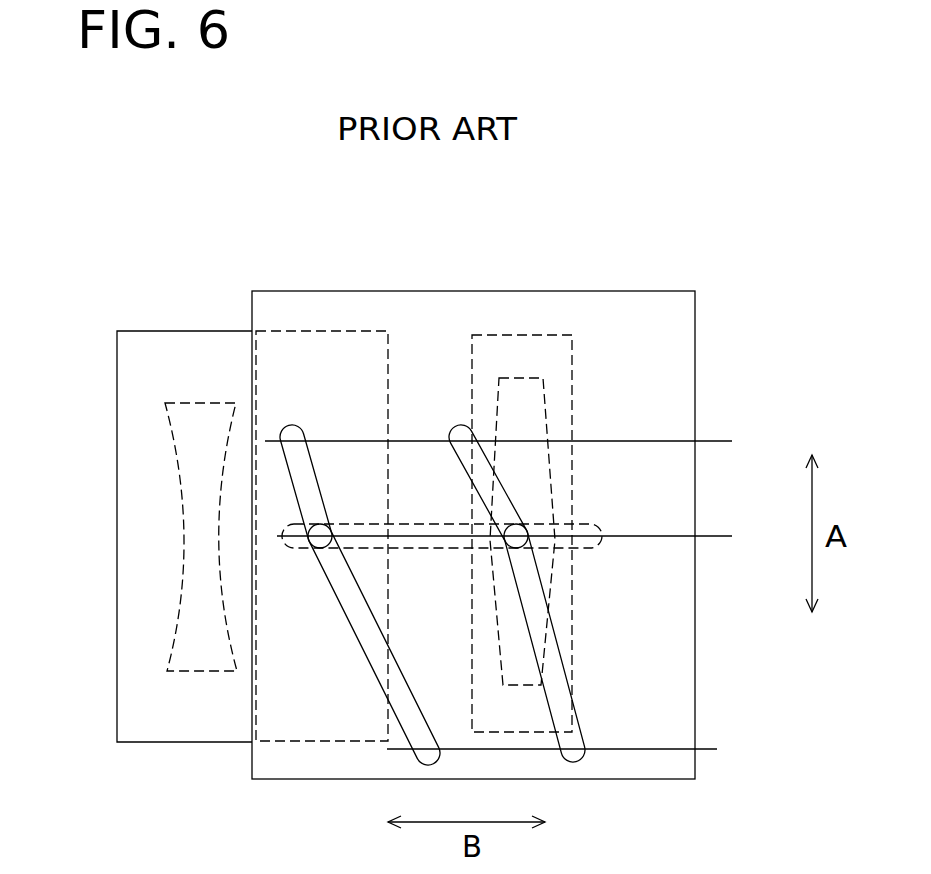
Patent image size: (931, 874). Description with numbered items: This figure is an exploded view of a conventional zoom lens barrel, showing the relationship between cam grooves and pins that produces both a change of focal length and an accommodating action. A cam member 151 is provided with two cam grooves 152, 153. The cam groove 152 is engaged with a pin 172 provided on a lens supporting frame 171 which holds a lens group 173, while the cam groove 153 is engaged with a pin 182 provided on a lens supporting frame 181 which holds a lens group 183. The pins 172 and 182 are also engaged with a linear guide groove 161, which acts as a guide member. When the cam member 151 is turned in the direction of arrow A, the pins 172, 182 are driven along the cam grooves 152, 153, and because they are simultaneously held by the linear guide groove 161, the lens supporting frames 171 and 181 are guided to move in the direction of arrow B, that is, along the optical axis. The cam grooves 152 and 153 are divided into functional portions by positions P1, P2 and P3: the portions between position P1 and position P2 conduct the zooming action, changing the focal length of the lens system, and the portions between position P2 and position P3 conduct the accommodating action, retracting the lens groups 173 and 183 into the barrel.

The cam member 151 is at (607, 291).
The cam groove 152 is at (368, 652).
The cam groove 153 is at (583, 720).
The linear guide groove 161 is at (583, 522).
The lens supporting frame 171 is at (117, 665).
The pin 172 is at (320, 524).
The lens group 173 is at (197, 480).
The lens supporting frame 181 is at (573, 586).
The pin 182 is at (516, 524).
The lens group 183 is at (517, 686).
The position P1 is at (519, 438).
The position P2 is at (526, 538).
The position P3 is at (578, 750).